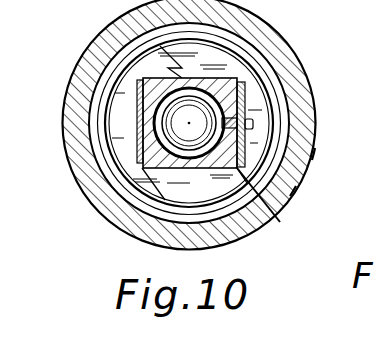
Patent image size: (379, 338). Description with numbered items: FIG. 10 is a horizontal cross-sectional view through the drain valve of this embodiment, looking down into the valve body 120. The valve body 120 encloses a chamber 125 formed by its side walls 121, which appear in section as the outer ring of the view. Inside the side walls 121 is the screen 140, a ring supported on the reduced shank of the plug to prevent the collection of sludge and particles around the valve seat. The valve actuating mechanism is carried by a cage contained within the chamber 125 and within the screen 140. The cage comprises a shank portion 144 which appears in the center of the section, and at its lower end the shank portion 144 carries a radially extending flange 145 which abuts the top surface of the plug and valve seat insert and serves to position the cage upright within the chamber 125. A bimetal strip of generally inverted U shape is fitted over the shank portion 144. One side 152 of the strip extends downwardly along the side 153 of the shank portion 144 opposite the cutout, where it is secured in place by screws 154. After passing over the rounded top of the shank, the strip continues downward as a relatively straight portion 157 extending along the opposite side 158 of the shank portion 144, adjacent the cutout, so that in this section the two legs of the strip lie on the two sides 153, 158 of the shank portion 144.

The valve body 120 is at (289, 43).
The side walls 121 is at (89, 47).
The chamber 125 is at (92, 150).
The screen 140 is at (100, 100).
The relatively straight portion 157 is at (189, 123).
The side of shank portion 158 is at (123, 157).
The radially extending flange 145 is at (176, 168).
The screws 154 is at (246, 121).
The side of bimetal strip 152 is at (315, 151).
The side of shank portion 153 is at (292, 193).
The shank portion 144 is at (278, 222).